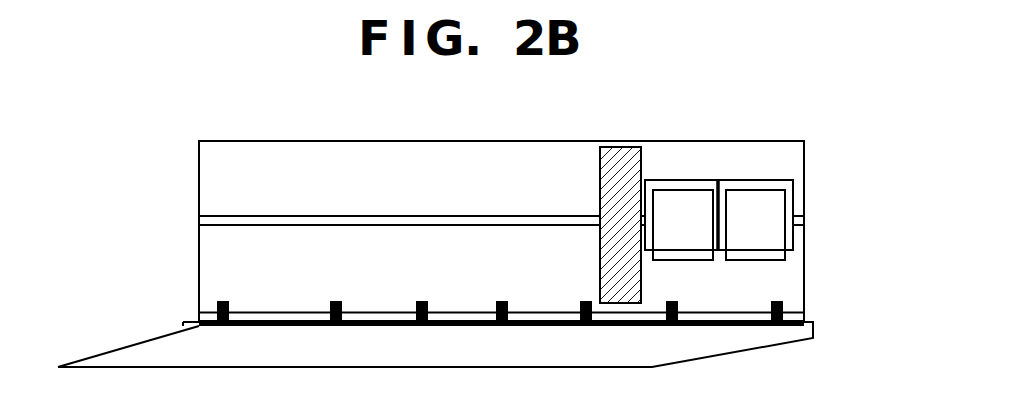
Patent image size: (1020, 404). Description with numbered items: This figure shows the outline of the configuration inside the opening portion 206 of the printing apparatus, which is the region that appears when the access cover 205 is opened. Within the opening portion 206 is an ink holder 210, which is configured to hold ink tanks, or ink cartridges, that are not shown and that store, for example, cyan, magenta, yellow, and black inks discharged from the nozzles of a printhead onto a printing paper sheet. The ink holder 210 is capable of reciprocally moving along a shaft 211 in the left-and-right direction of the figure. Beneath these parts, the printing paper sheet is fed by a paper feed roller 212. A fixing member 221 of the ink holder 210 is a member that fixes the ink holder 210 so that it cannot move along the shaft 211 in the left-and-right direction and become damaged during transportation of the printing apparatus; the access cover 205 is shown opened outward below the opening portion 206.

The access cover 205 is at (672, 352).
The opening portion 206 is at (470, 141).
The ink holder 210 is at (760, 180).
The shaft 211 is at (468, 215).
The paper feed roller 212 is at (468, 312).
The fixing member 221 is at (620, 147).